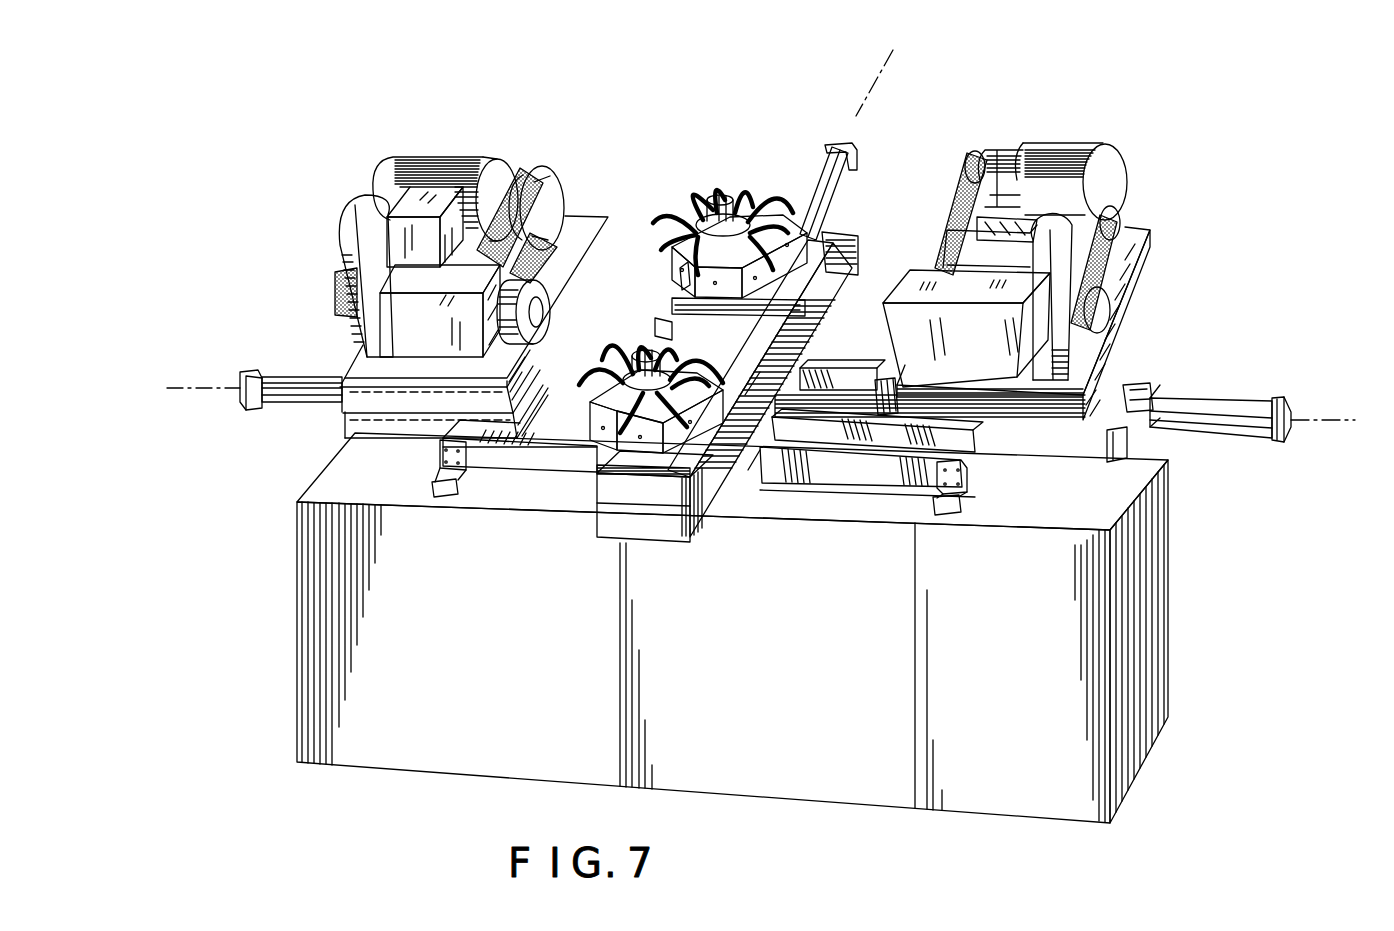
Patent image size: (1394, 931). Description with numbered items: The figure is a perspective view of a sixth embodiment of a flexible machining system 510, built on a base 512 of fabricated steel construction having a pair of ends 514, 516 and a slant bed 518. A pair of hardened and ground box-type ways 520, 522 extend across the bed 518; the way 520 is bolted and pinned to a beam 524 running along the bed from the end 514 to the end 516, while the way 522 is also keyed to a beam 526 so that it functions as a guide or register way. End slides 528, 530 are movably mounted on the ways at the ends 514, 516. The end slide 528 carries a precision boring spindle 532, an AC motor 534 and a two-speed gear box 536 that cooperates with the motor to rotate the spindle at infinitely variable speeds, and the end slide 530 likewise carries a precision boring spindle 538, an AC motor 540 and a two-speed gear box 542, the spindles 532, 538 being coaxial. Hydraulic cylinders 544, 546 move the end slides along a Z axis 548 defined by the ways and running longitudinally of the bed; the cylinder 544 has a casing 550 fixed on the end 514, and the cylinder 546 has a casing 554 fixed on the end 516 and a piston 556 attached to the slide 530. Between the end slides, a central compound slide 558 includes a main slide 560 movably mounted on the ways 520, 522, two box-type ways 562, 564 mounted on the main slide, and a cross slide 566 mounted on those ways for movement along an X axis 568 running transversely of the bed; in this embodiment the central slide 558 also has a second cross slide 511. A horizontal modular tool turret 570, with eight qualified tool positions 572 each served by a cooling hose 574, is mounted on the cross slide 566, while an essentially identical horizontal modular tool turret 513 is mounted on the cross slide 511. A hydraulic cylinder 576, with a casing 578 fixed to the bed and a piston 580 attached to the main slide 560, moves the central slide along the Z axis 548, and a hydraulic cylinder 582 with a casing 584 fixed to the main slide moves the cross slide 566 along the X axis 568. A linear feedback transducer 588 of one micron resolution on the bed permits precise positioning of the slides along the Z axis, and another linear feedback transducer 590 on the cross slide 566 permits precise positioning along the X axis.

The flexible machining system 510 is at (1135, 132).
The cross slide 511 is at (597, 490).
The base 512 is at (722, 632).
The horizontal modular tool turret 513 is at (587, 445).
The end of base 514 is at (297, 607).
The end of base 516 is at (1155, 557).
The slant bed 518 is at (988, 512).
The way 520 is at (587, 377).
The way 522 is at (823, 447).
The beam 524 is at (1137, 383).
The beam 526 is at (1130, 440).
The end slide 528 is at (343, 411).
The end slide 530 is at (1147, 263).
The precision boring spindle 532 is at (537, 287).
The AC motor 534 is at (493, 163).
The two-speed gear box 536 is at (407, 190).
The precision boring spindle 538 is at (884, 300).
The AC motor 540 is at (1067, 140).
The two-speed gear box 542 is at (980, 200).
The hydraulic cylinder 544 is at (257, 371).
The hydraulic cylinder 546 is at (1285, 400).
The Z axis 548 is at (1332, 418).
The casing 550 is at (287, 376).
The casing 554 is at (1225, 400).
The piston 556 is at (1153, 410).
The central compound slide 558 is at (750, 450).
The main slide 560 is at (760, 375).
The way 562 is at (677, 303).
The way 564 is at (752, 360).
The cross slide 566 is at (830, 237).
The X axis 568 is at (867, 93).
The horizontal modular tool turret 570 is at (720, 178).
The tool positions 572 is at (682, 272).
The cooling hoses 574 is at (670, 197).
The hydraulic cylinder 576 is at (882, 390).
The casing 578 is at (887, 410).
The piston 580 is at (780, 450).
The hydraulic cylinder 582 is at (837, 147).
The casing 584 is at (803, 183).
The linear feedback transducer 588 is at (483, 467).
The linear feedback transducer 590 is at (667, 320).